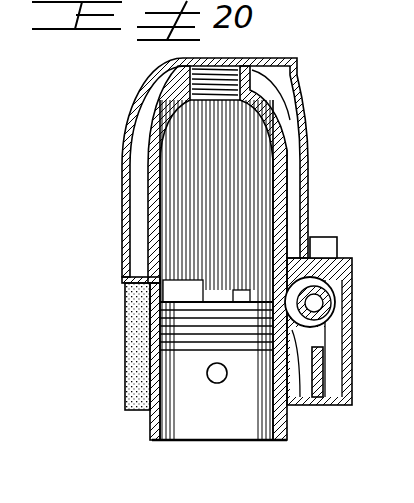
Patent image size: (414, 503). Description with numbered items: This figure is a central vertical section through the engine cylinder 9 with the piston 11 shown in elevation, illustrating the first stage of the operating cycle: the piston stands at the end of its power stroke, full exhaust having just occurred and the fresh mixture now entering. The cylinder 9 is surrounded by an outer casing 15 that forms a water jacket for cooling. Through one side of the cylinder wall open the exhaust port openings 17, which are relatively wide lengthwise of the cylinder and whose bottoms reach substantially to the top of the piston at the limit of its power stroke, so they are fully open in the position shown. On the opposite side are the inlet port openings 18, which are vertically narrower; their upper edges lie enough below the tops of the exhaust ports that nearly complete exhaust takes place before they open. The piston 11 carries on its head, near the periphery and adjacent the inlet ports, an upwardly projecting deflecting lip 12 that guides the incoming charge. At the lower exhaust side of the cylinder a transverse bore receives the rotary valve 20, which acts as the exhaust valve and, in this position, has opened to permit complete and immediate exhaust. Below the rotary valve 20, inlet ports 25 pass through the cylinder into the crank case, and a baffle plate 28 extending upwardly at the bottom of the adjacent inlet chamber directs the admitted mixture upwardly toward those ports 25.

The cylinder 9 is at (282, 134).
The piston 11 is at (187, 407).
The deflecting lip 12 is at (152, 283).
The outer casing 15 is at (308, 183).
The exhaust port openings 17 is at (287, 247).
The inlet port openings 18 is at (150, 303).
The rotary valve 20 is at (322, 292).
The inlet ports to the crank case 25 is at (305, 401).
The baffle plate 28 is at (323, 355).